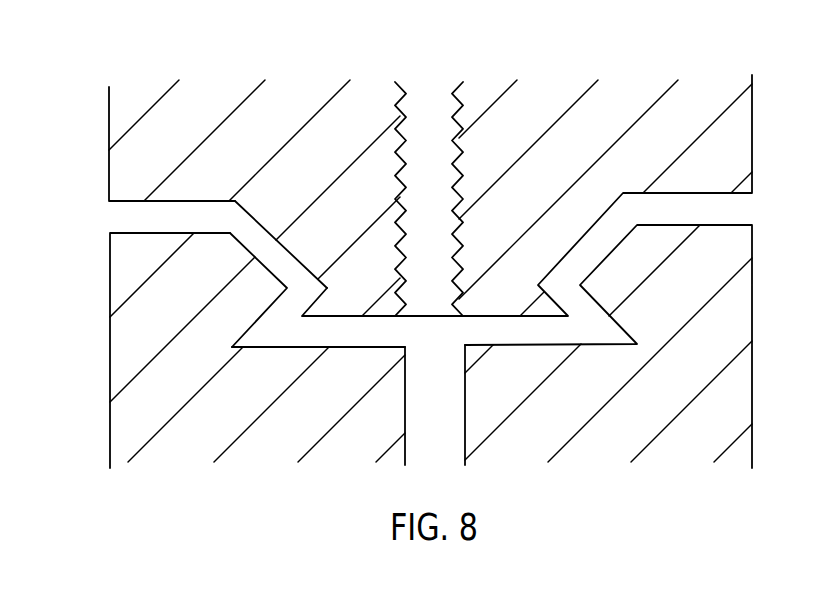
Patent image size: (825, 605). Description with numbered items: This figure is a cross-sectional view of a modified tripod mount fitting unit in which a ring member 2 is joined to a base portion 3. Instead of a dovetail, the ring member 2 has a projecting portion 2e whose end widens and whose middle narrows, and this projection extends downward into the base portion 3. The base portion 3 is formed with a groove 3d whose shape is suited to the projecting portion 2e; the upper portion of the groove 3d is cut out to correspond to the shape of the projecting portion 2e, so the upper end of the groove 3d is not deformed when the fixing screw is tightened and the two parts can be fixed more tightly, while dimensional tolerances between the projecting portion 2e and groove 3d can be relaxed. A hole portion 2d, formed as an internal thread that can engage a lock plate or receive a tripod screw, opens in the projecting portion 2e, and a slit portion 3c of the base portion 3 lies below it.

The ring member 2 is at (137, 174).
The hole portion 2d is at (446, 158).
The projecting portion 2e is at (270, 232).
The base portion 3 is at (738, 297).
The slit portion 3c is at (445, 412).
The groove 3d is at (237, 341).